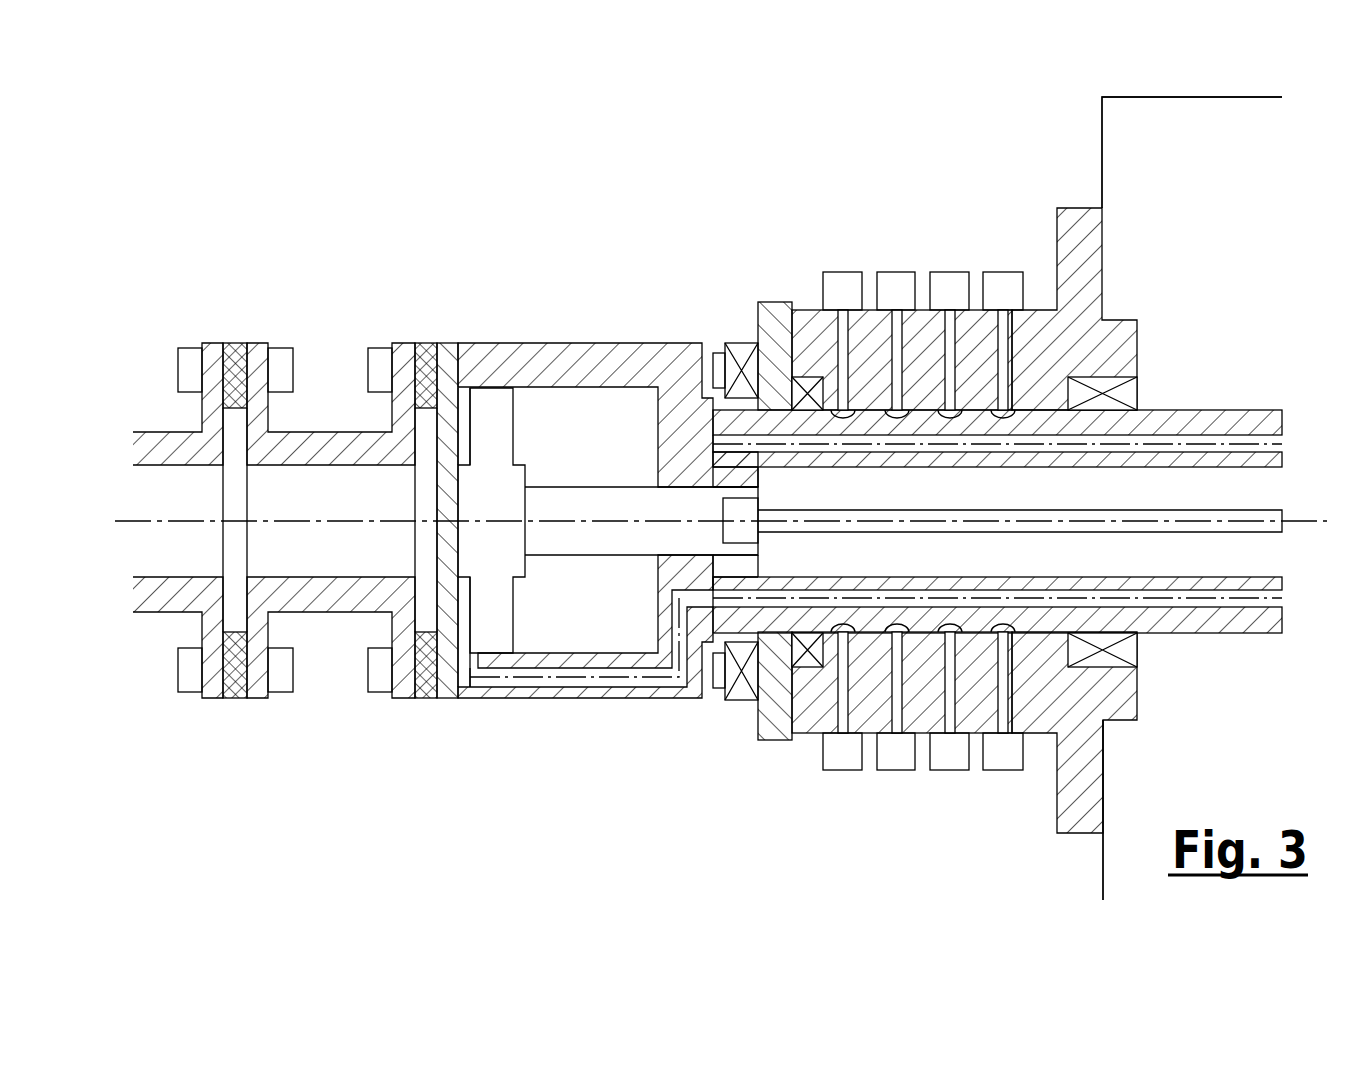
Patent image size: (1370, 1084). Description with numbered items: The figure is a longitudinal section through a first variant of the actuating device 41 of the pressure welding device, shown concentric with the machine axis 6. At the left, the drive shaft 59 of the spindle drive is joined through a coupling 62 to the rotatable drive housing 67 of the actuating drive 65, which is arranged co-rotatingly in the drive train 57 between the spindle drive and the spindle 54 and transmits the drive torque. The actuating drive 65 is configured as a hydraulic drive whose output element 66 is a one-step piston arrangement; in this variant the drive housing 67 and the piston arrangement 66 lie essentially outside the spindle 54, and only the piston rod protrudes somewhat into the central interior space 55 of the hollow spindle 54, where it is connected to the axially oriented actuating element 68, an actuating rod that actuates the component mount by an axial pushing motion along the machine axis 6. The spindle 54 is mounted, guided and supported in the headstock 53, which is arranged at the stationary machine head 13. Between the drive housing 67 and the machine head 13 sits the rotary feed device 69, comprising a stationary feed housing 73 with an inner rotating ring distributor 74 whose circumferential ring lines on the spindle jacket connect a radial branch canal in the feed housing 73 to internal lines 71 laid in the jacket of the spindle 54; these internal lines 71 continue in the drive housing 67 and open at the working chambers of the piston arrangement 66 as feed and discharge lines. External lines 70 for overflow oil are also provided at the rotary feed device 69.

The machine axis 6 is at (613, 518).
The machine head 13 is at (1192, 183).
The headstock 53 is at (1192, 498).
The actuating device 41 is at (468, 325).
The spindle 54 is at (1235, 420).
The central interior space 55 is at (1242, 553).
The drive train 57 is at (207, 723).
The drive shaft 59 is at (168, 442).
The coupling 62 is at (340, 442).
The actuating drive 65 is at (627, 343).
The output element 66 is at (545, 538).
The drive housing 67 is at (542, 343).
The actuating element 68 is at (1260, 513).
The rotary feed device 69 is at (807, 290).
The external lines 70 is at (843, 290).
The internal lines 71 is at (1258, 441).
The feed housing 73 is at (1047, 330).
The ring distributor 74 is at (917, 645).